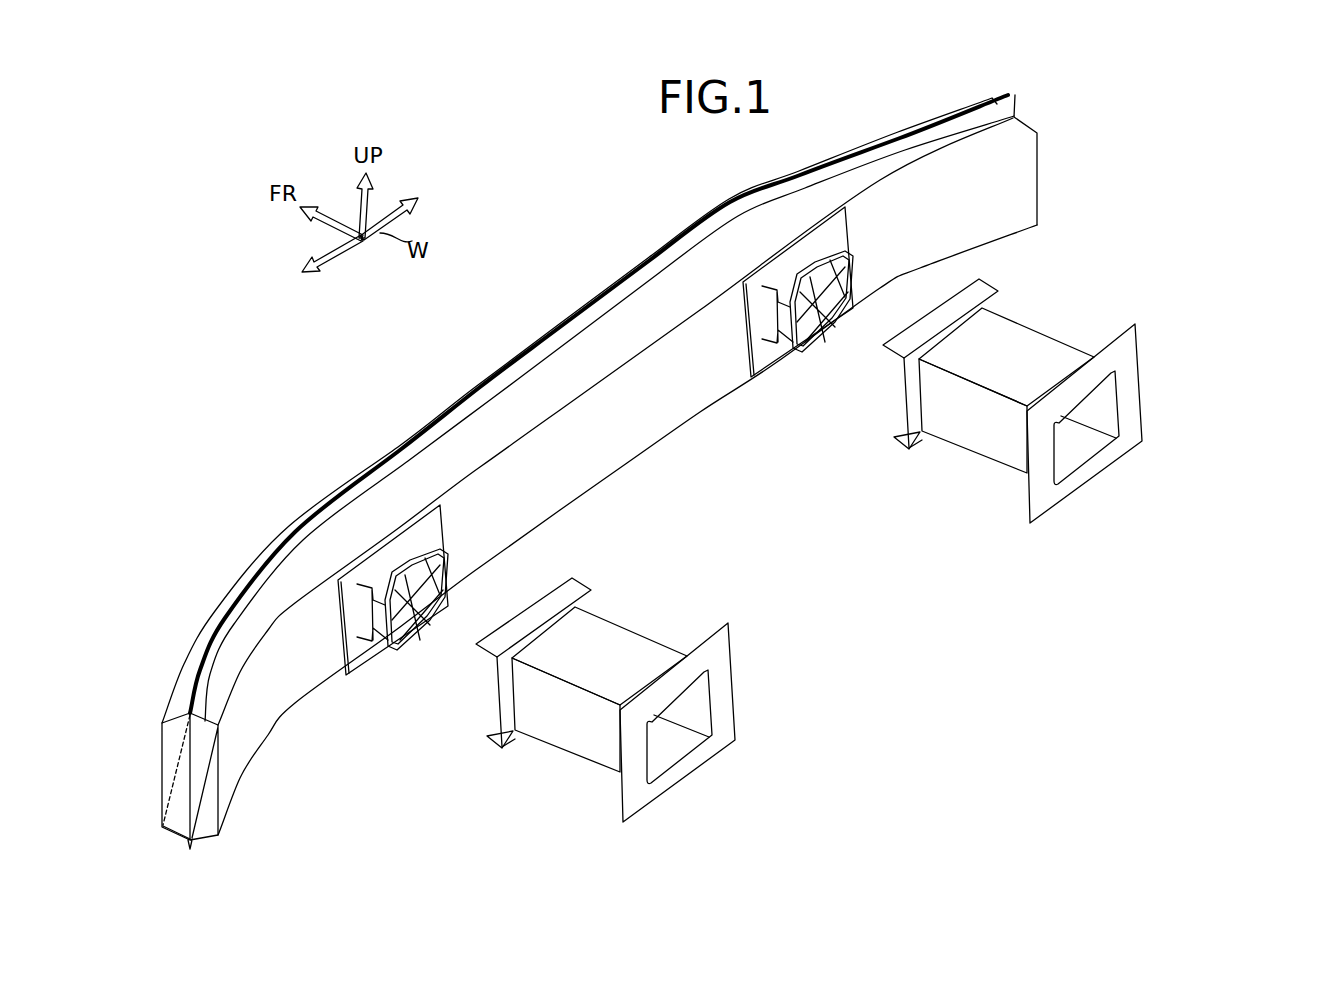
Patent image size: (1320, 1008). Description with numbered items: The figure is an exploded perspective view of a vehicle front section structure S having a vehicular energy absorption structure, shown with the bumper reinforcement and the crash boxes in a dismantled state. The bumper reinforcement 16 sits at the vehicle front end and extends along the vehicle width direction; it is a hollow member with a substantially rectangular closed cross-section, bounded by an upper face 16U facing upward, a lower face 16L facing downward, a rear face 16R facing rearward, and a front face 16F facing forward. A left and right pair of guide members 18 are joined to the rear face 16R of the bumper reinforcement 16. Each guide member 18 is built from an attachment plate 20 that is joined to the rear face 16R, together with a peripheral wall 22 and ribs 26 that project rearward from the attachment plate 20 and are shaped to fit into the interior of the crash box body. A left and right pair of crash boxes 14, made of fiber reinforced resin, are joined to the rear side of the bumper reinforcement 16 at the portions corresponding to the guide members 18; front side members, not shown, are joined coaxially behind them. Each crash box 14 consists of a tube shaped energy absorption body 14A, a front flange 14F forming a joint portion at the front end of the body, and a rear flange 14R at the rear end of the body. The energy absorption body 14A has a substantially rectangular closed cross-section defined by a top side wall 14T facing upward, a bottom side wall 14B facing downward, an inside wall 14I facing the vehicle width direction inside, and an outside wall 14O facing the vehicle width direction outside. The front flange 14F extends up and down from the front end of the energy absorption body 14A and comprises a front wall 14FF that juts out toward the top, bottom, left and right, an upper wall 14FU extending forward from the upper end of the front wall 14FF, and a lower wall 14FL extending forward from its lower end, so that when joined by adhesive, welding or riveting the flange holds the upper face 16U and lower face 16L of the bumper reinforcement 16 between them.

The vehicle front section structure S is at (1088, 155).
The crash box 14 is at (637, 512).
The energy absorption body 14A is at (636, 620).
The bottom side wall 14B is at (672, 752).
The front flange 14F is at (598, 578).
The upper wall 14FU is at (537, 607).
The front wall 14FF is at (506, 690).
The lower wall 14FL is at (490, 739).
The inside wall 14I is at (705, 702).
The outside wall 14O is at (605, 760).
The rear flange 14R is at (745, 664).
The top side wall 14T is at (577, 670).
The bumper reinforcement 16 is at (638, 248).
The front face 16F is at (390, 410).
The lower face 16L is at (625, 462).
The rear face 16R is at (700, 385).
The upper face 16U is at (597, 345).
The guide member 18 is at (350, 682).
The attachment plate 20 is at (353, 613).
The peripheral wall 22 is at (383, 648).
The ribs 26 is at (448, 611).